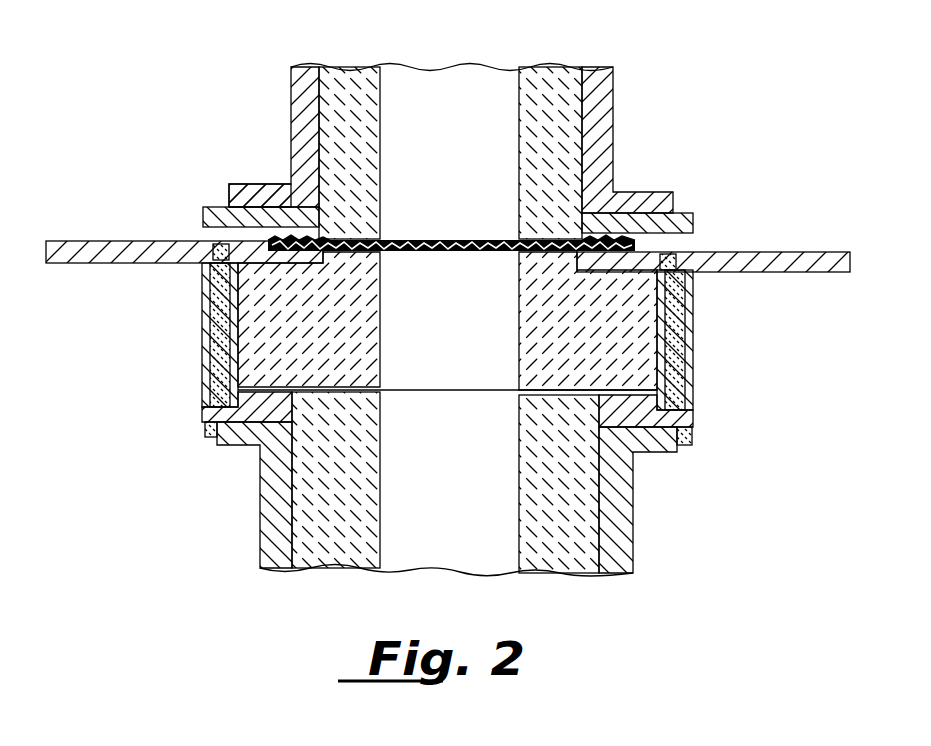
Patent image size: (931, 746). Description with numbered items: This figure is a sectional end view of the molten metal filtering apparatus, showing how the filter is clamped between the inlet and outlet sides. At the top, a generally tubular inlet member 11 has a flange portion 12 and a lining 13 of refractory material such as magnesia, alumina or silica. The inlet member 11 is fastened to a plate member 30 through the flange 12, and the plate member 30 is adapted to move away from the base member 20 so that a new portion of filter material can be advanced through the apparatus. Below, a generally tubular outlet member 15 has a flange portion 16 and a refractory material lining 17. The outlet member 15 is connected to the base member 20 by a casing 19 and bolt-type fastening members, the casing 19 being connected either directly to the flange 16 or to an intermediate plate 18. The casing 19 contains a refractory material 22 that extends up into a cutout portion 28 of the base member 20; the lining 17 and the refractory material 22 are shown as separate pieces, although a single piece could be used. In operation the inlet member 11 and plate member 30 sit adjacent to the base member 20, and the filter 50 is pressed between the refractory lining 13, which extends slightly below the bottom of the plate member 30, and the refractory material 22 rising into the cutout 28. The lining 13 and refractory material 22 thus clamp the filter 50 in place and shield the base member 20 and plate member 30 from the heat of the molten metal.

The inlet member 11 is at (300, 119).
The flange portion 12 is at (250, 192).
The lining 13 is at (545, 118).
The outlet member 15 is at (280, 517).
The flange portion 16 is at (260, 428).
The refractory material lining 17 is at (570, 557).
The intermediate plate 18 is at (650, 456).
The casing 19 is at (693, 317).
The base member 20 is at (693, 221).
The refractory material 22 is at (618, 356).
The cutout portion 28 is at (318, 263).
The plate member 30 is at (212, 216).
The filter 50 is at (472, 239).